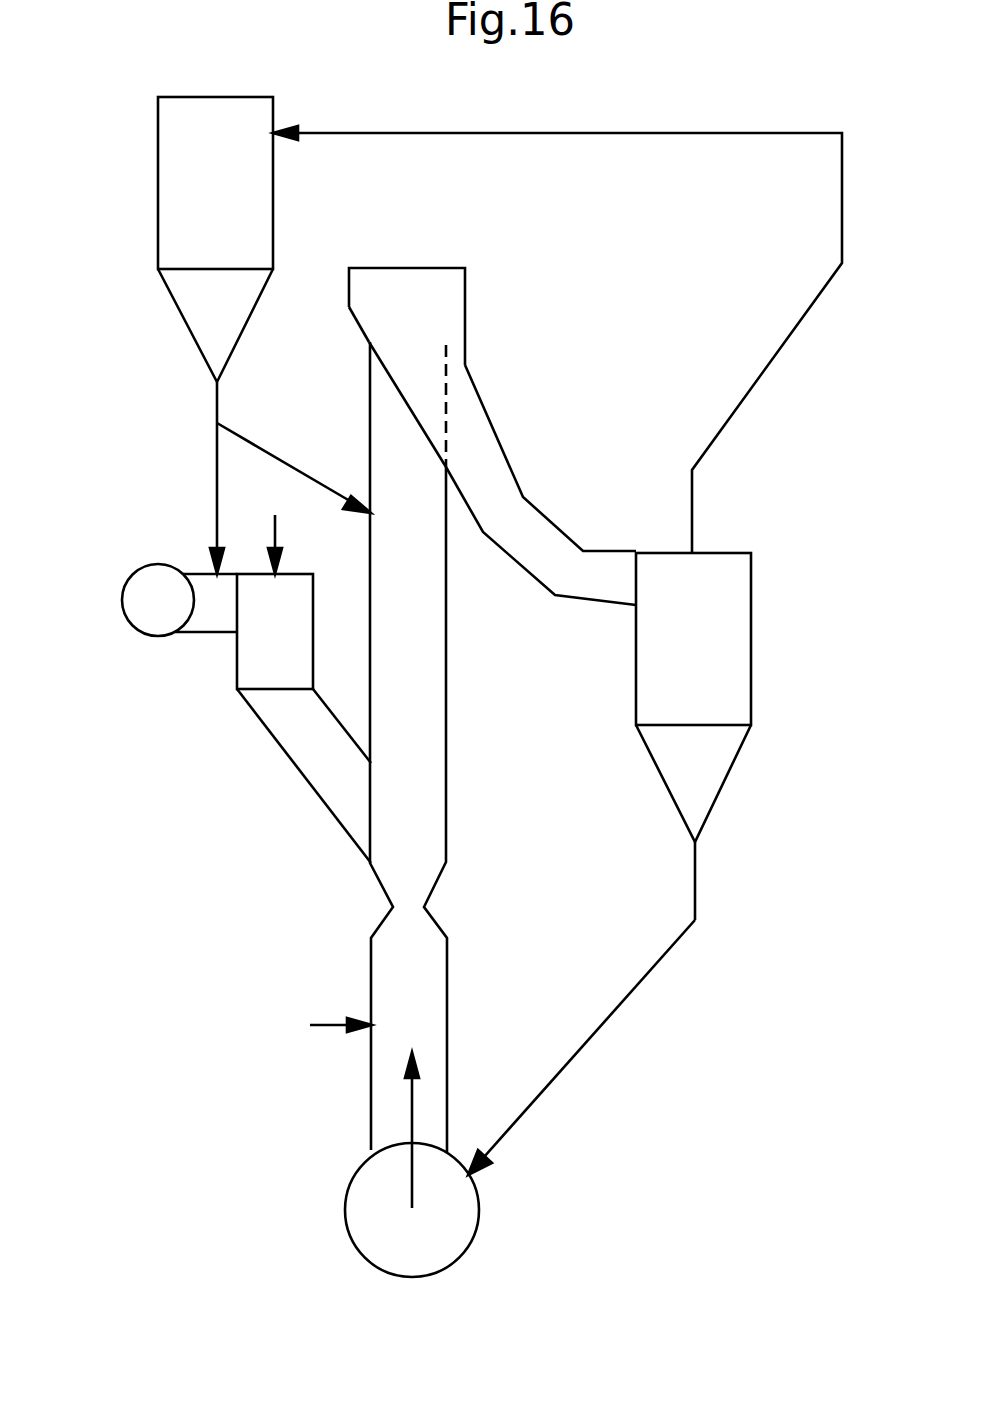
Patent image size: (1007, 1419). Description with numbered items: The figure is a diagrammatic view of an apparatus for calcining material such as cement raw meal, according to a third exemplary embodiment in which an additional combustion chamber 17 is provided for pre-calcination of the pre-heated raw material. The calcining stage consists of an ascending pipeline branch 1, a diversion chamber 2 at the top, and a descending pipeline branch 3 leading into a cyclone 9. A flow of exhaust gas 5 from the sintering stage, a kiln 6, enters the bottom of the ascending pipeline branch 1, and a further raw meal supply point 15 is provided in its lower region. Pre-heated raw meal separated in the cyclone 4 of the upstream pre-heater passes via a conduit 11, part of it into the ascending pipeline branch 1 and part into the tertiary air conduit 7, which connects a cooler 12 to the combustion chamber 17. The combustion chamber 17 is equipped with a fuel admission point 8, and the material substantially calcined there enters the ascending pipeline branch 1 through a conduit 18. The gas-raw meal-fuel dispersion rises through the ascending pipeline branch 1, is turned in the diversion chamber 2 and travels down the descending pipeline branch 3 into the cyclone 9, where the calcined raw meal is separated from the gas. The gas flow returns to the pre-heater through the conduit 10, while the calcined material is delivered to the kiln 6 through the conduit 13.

The ascending pipeline branch 1 is at (427, 698).
The diversion chamber 2 is at (435, 282).
The descending pipeline branch 3 is at (488, 460).
The cyclone 4 is at (214, 105).
The flow of exhaust gas 5 is at (410, 1097).
The kiln 6 is at (368, 1240).
The tertiary air conduit 7 is at (223, 625).
The fuel admission point 8 is at (280, 540).
The cyclone 9 is at (727, 662).
The conduit 10 is at (770, 365).
The conduit 11 is at (218, 403).
The cooler 12 is at (140, 610).
The conduit 13 is at (597, 1028).
The raw meal supply point 15 is at (332, 1023).
The combustion chamber 17 is at (255, 670).
The conduit 18 is at (323, 770).